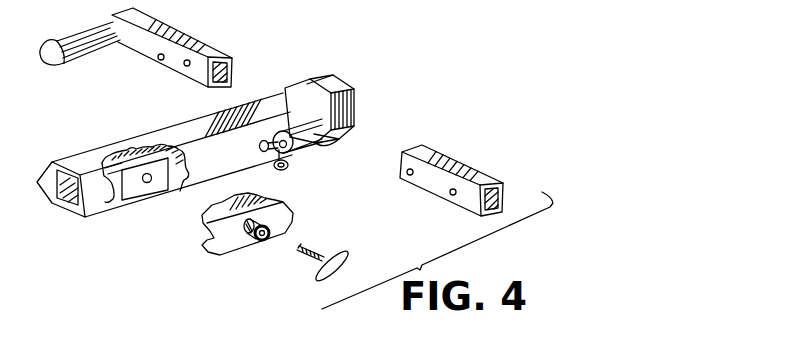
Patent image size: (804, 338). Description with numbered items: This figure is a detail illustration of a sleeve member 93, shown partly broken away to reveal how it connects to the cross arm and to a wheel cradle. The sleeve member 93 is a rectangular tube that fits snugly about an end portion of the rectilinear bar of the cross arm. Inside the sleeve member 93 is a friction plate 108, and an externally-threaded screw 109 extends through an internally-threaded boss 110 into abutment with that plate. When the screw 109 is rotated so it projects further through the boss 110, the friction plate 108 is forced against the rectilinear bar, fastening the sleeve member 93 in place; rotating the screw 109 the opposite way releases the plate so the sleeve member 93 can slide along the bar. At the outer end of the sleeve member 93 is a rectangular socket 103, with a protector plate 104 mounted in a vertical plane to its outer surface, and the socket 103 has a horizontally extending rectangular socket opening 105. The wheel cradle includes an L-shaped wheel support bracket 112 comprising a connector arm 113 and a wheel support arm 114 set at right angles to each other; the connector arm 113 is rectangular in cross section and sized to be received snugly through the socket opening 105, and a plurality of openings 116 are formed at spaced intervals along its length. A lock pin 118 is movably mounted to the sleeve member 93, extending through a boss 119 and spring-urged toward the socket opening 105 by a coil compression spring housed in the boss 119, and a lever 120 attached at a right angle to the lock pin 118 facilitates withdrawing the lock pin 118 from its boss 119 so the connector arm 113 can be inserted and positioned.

The sleeve member 93 is at (204, 116).
The rectangular socket 103 is at (322, 97).
The protector plate 104 is at (341, 98).
The rectangular socket opening 105 is at (347, 133).
The friction plate 108 is at (143, 191).
The externally-threaded screw 109 is at (333, 270).
The internally-threaded boss 110 is at (249, 238).
The L-shaped wheel support bracket 112 is at (132, 63).
The connector arm 113 is at (195, 35).
The wheel support arm 114 is at (87, 33).
The openings 116 is at (184, 66).
The lock pin 118 is at (264, 142).
The boss 119 is at (307, 147).
The lever 120 is at (282, 168).